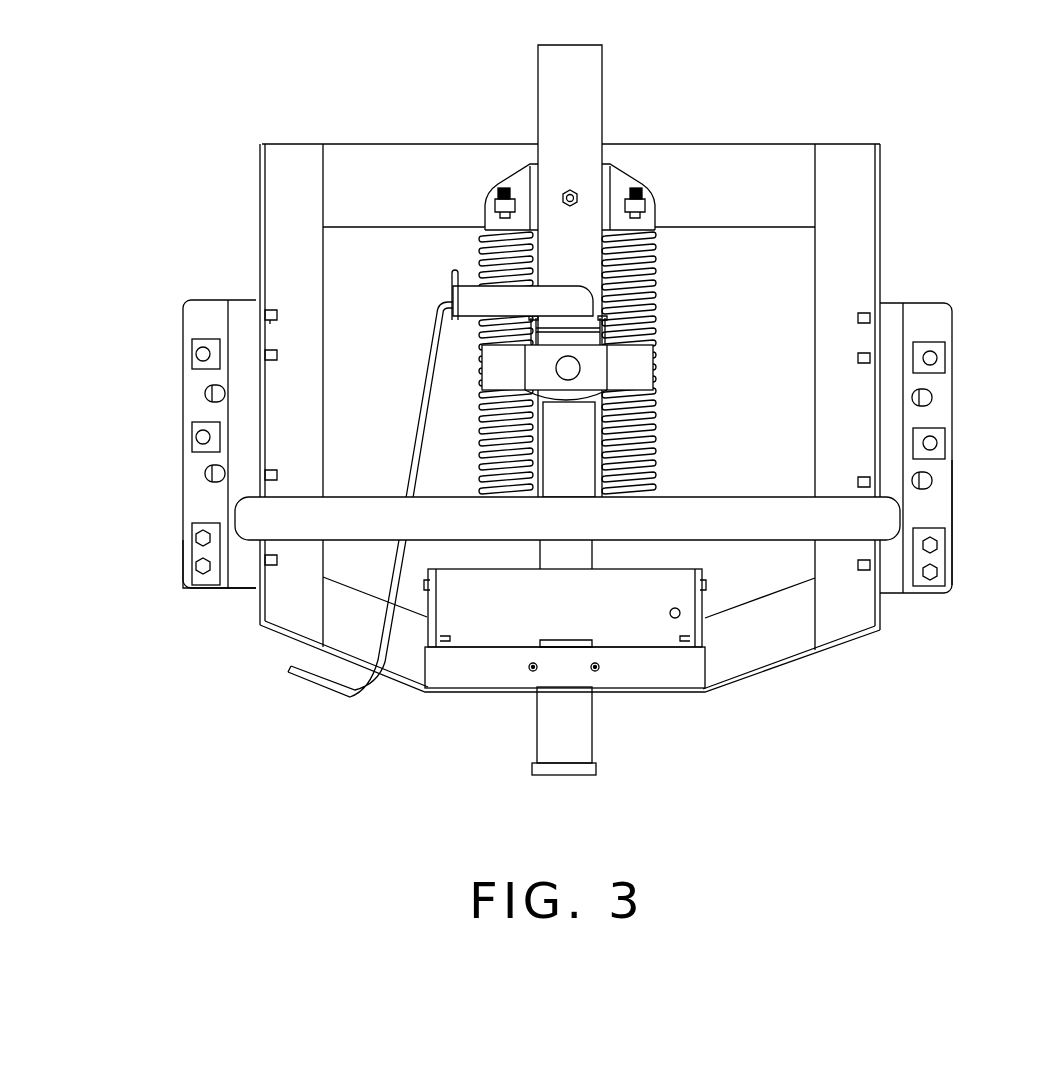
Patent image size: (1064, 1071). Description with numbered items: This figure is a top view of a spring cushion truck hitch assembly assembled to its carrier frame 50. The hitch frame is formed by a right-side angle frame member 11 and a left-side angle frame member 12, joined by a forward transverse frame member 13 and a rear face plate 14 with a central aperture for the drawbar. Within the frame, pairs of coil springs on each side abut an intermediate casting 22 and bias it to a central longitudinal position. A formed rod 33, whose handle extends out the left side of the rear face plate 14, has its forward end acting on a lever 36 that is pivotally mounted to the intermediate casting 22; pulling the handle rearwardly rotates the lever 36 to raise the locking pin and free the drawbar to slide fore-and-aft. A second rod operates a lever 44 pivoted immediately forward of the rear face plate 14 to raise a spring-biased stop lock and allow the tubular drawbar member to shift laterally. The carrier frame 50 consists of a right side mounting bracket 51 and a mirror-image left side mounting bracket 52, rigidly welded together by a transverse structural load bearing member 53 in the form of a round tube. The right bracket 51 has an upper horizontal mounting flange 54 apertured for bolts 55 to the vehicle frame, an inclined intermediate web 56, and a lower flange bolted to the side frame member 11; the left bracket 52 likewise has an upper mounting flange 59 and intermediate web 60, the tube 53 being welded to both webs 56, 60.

The right-side angle frame member 11 is at (883, 210).
The left-side angle frame member 12 is at (258, 172).
The forward transverse frame member 13 is at (780, 172).
The rear face plate 14 is at (790, 668).
The intermediate casting 22 is at (655, 368).
The formed rod 33 is at (420, 425).
The lever 36 is at (462, 285).
The lever 44 is at (445, 545).
The carrier frame 50 is at (952, 402).
The right side mounting bracket 51 is at (953, 500).
The left side mounting bracket 52 is at (180, 550).
The transverse structural load bearing member 53 is at (752, 525).
The upper horizontal mounting flange 54 is at (942, 312).
The bolts 55 is at (203, 437).
The intermediate web 56 is at (893, 322).
The upper horizontal apertured mounting flange 59 is at (207, 312).
The intermediate web 60 is at (237, 573).